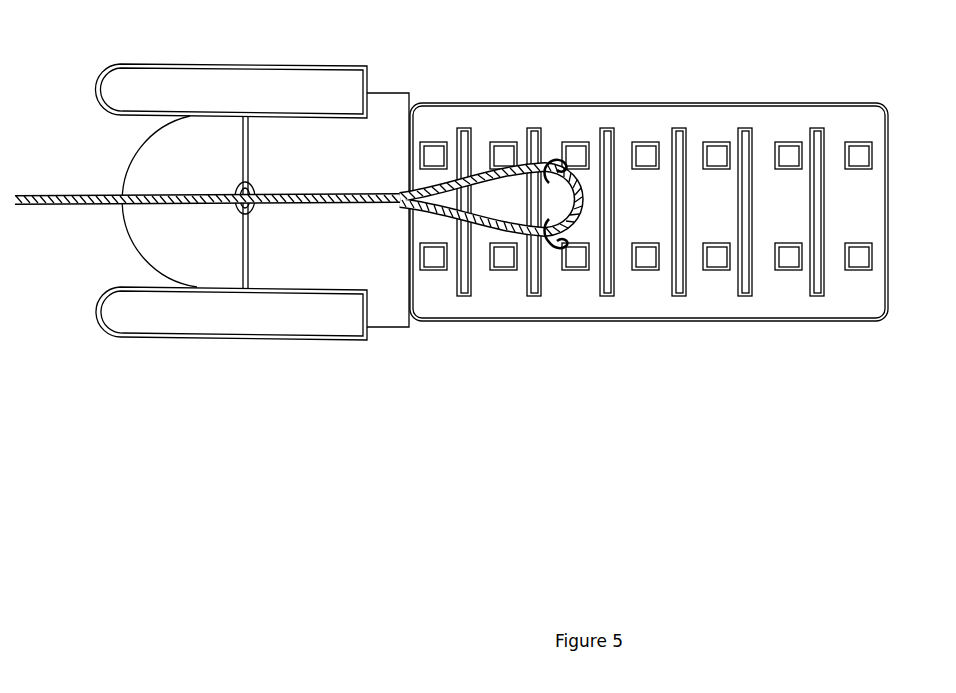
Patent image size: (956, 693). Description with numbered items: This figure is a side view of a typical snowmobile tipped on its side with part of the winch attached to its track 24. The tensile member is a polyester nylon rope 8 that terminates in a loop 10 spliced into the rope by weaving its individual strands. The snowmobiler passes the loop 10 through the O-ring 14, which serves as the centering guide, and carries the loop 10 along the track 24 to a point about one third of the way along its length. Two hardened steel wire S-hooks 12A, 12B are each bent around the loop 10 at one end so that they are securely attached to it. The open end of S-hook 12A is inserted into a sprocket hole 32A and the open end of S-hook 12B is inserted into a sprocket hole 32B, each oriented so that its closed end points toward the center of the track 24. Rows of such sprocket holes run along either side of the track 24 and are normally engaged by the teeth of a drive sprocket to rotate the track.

The rope 8 is at (52, 202).
The loop 10 is at (481, 226).
The S-hook 12A is at (551, 163).
The S-hook 12B is at (553, 250).
The O-ring 14 is at (252, 205).
The track 24 is at (817, 308).
The sprocket hole 32A is at (573, 150).
The sprocket hole 32B is at (575, 262).